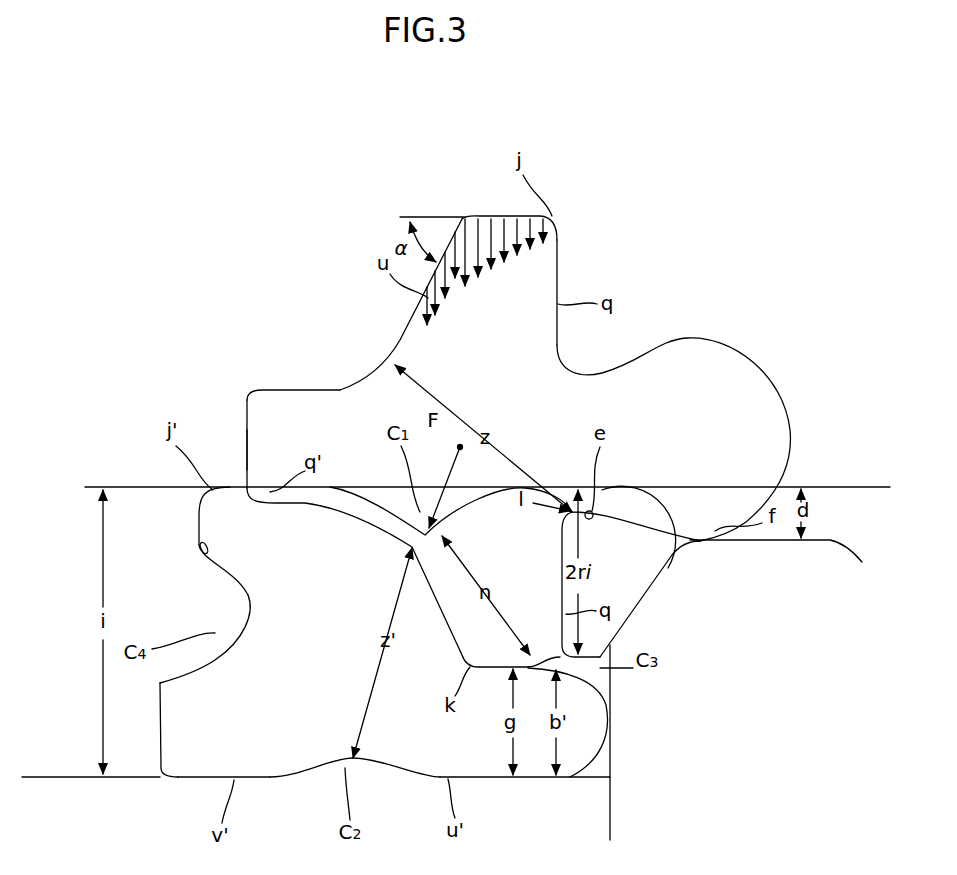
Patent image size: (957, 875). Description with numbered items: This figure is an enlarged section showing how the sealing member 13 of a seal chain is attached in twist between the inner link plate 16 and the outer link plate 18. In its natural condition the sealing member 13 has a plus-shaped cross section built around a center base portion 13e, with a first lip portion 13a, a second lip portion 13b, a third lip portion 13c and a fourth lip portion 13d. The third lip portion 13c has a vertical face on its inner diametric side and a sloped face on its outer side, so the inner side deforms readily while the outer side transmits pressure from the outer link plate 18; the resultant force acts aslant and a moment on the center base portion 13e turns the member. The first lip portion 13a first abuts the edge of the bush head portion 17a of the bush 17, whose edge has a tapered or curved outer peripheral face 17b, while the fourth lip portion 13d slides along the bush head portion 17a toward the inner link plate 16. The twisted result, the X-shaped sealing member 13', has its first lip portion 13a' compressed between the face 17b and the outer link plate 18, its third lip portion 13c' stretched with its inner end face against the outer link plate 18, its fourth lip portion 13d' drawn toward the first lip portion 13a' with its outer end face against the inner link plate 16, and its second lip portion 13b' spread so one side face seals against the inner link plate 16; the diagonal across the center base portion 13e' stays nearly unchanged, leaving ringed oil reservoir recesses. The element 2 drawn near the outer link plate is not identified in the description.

The sprocket 2 is at (242, 486).
The sealing member 13 is at (473, 375).
The first lip portion 13a is at (673, 421).
The second lip portion 13b is at (293, 364).
The third lip portion 13c is at (592, 292).
The fourth lip portion 13d is at (387, 590).
The center base portion 13e is at (393, 304).
The sealing member 13' is at (440, 632).
The first lip portion 13a' is at (664, 599).
The second lip portion 13b' is at (196, 798).
The third lip portion 13c' is at (189, 568).
The fourth lip portion 13d' is at (525, 809).
The center base portion 13e' is at (229, 635).
The inner link plate 16 is at (60, 800).
The bush 17 is at (628, 815).
The bush head portion 17a is at (823, 558).
The outer peripheral face 17b is at (657, 580).
The outer link plate 18 is at (156, 490).